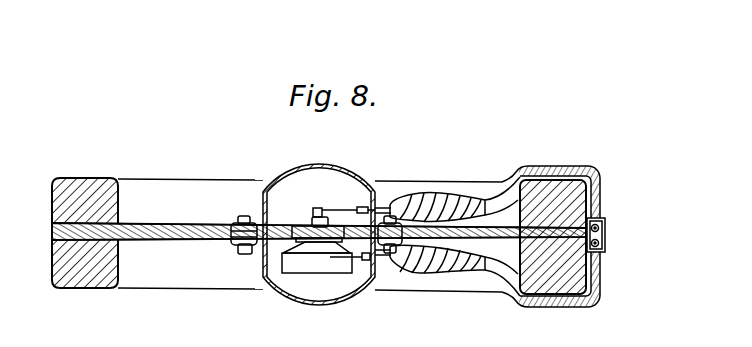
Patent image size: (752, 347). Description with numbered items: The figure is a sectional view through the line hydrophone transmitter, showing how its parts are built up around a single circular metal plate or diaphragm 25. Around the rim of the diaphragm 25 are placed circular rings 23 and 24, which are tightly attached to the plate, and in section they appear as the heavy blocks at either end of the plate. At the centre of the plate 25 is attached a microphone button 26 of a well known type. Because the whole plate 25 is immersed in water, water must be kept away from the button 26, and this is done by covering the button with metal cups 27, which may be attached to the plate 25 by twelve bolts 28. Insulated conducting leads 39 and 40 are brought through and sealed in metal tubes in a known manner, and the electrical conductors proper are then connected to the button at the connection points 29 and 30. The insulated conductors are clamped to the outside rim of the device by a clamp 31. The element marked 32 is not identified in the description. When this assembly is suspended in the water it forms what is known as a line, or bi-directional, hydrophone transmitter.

The circular ring 23 is at (67, 190).
The circular ring 24 is at (93, 280).
The circular metal plate or diaphragm 25 is at (138, 224).
The microphone button 26 is at (304, 273).
The metal cups 27 is at (285, 175).
The bolts 28 is at (243, 254).
The button connection 29 is at (330, 207).
The button connection 30 is at (339, 273).
The clamp 31 is at (606, 233).
The end block 32 is at (600, 186).
The insulated conducting lead 39 is at (540, 170).
The insulated conducting lead 40 is at (543, 300).